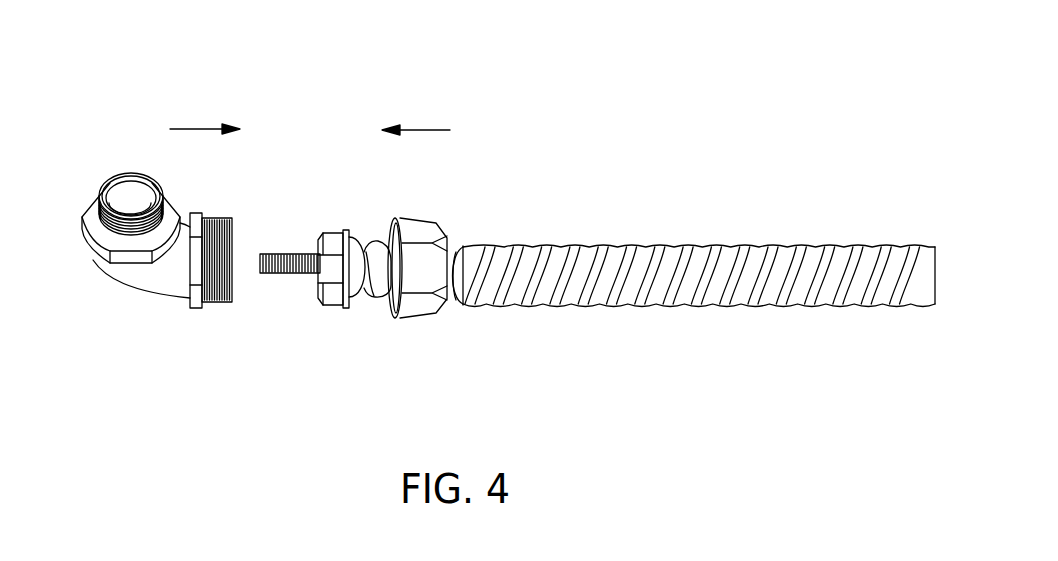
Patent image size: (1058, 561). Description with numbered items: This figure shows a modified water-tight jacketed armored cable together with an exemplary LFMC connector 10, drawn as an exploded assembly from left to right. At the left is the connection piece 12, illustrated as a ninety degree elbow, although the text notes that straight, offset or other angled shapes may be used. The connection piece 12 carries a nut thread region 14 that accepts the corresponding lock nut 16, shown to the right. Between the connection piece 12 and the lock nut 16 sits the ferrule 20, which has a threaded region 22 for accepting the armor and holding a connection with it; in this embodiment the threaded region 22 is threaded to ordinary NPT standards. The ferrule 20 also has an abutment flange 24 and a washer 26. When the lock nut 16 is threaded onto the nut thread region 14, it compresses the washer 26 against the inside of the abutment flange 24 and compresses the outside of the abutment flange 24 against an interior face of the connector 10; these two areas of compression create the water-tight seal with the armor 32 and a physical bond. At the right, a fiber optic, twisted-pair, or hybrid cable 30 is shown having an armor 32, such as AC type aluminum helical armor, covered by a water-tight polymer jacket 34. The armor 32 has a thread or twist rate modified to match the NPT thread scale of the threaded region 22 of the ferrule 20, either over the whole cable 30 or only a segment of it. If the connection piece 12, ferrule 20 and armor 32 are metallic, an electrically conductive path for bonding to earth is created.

The LFMC connector 10 is at (131, 120).
The connection piece 12 is at (158, 285).
The nut thread region 14 is at (223, 232).
The lock nut 16 is at (427, 222).
The ferrule 20 is at (325, 285).
The threaded region 22 is at (368, 283).
The abutment flange 24 is at (338, 296).
The washer 26 is at (353, 231).
The cable 30 is at (685, 304).
The armor 32 is at (456, 290).
The water-tight polymer jacket 34 is at (742, 247).